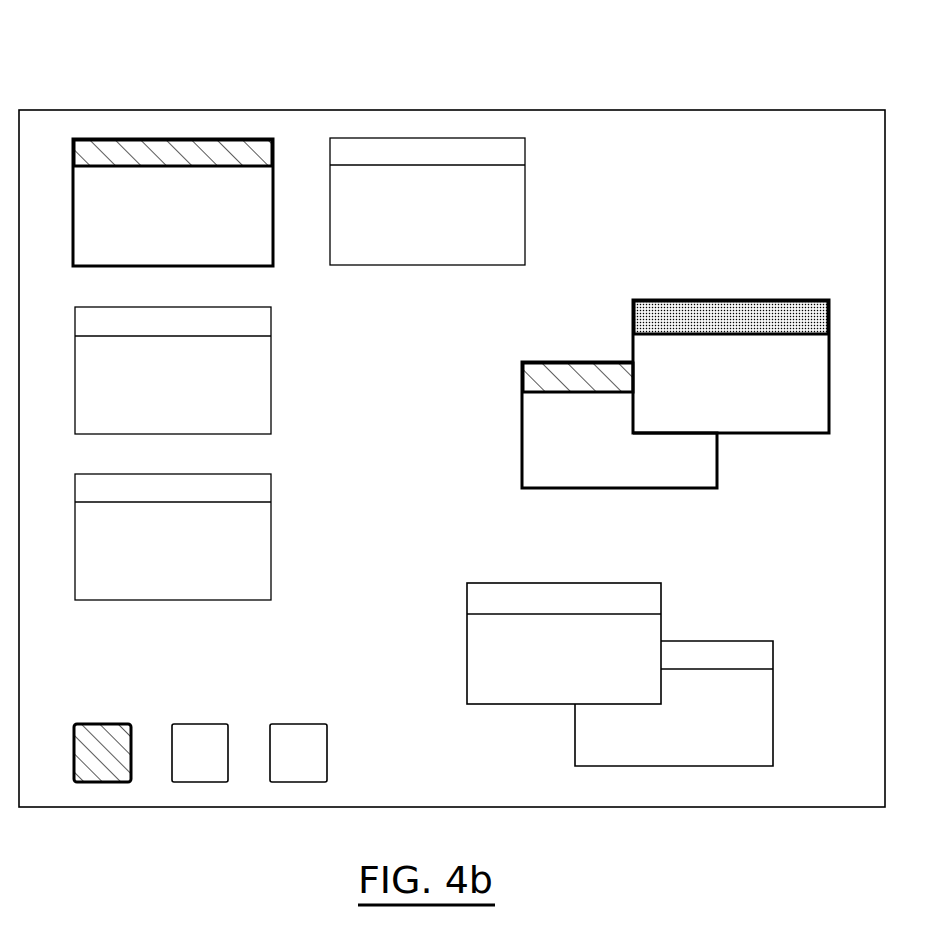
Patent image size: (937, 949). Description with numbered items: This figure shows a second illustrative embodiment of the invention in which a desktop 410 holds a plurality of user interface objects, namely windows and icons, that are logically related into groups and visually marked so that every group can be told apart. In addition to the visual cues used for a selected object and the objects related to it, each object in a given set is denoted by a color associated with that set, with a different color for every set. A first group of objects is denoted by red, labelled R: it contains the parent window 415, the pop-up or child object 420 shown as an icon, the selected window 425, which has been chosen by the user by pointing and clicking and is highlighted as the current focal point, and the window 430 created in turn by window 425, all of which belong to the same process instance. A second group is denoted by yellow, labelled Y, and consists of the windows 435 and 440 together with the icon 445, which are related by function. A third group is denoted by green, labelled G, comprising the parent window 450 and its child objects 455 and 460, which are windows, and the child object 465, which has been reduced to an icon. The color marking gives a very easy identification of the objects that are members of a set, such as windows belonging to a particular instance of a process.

The desktop 410 is at (142, 99).
The parent window 415 is at (265, 267).
The pop-up or child object 420 is at (105, 723).
The selected window 425 is at (780, 299).
The window 430 is at (521, 407).
The window 435 is at (271, 403).
The window 440 is at (507, 265).
The icon 445 is at (207, 723).
The parent window 450 is at (271, 566).
The child object 455 is at (466, 662).
The child object 460 is at (735, 641).
The child object 465 is at (307, 723).